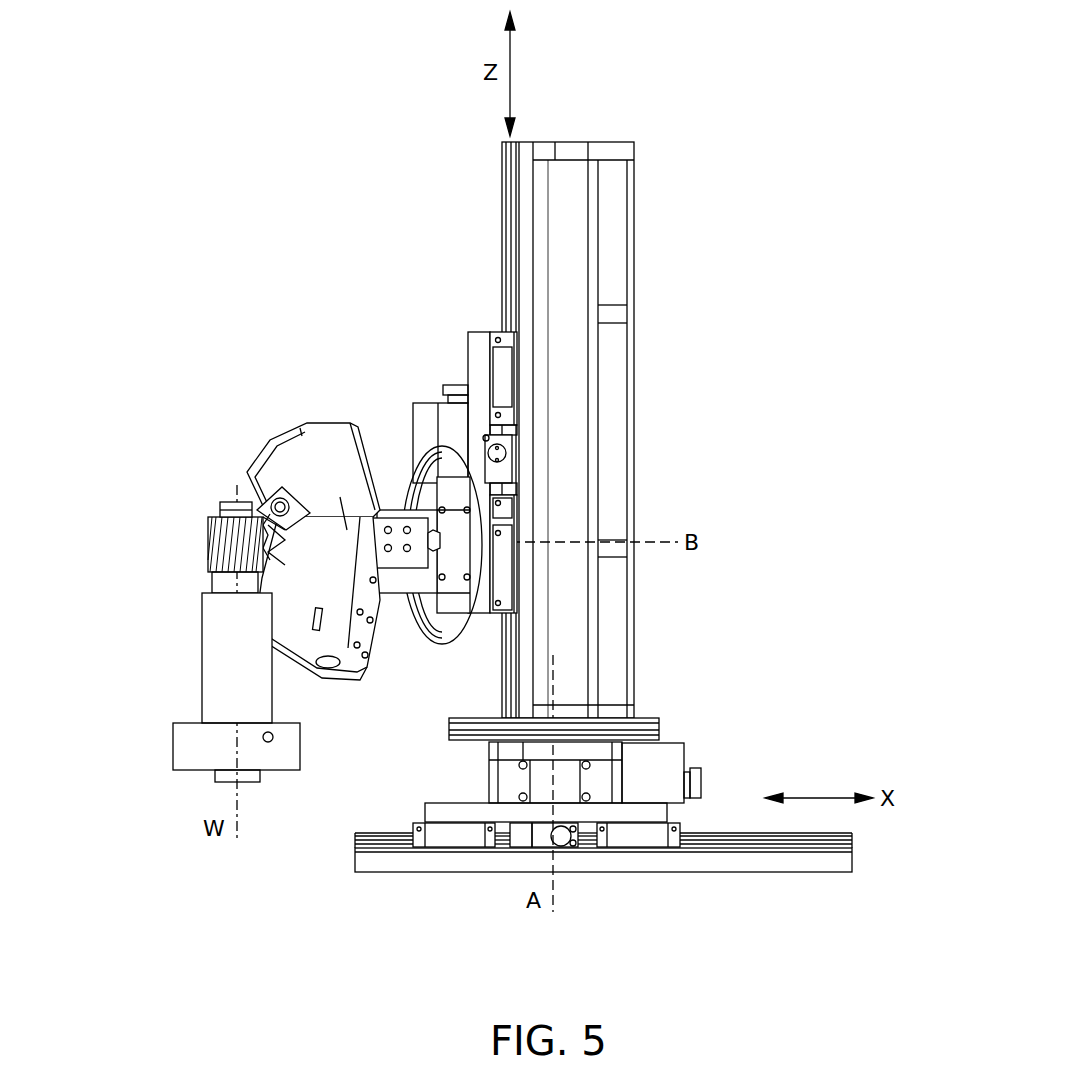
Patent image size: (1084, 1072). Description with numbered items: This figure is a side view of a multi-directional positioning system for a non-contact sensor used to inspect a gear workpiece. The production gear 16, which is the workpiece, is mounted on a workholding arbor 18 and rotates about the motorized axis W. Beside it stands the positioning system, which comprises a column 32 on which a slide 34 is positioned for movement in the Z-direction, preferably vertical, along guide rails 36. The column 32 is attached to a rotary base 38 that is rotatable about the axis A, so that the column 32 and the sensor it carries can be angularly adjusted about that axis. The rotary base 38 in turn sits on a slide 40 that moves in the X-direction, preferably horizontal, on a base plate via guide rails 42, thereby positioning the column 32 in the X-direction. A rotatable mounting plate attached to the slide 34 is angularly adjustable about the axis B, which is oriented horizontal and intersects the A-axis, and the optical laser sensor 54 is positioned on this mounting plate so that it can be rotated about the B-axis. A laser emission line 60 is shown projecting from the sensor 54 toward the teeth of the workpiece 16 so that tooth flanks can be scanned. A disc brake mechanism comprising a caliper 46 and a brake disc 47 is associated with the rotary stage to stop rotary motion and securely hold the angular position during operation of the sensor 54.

The production gear 16 is at (207, 528).
The workholding arbor 18 is at (200, 673).
The column 32 is at (610, 147).
The slide 34 is at (478, 350).
The guide rails 36 is at (500, 195).
The rotary base 38 is at (510, 779).
The slide 40 is at (654, 812).
The guide rails 42 is at (740, 833).
The caliper 46 is at (397, 553).
The brake disc 47 is at (452, 628).
The sensor 54 is at (290, 427).
The laser emission line 60 is at (290, 548).